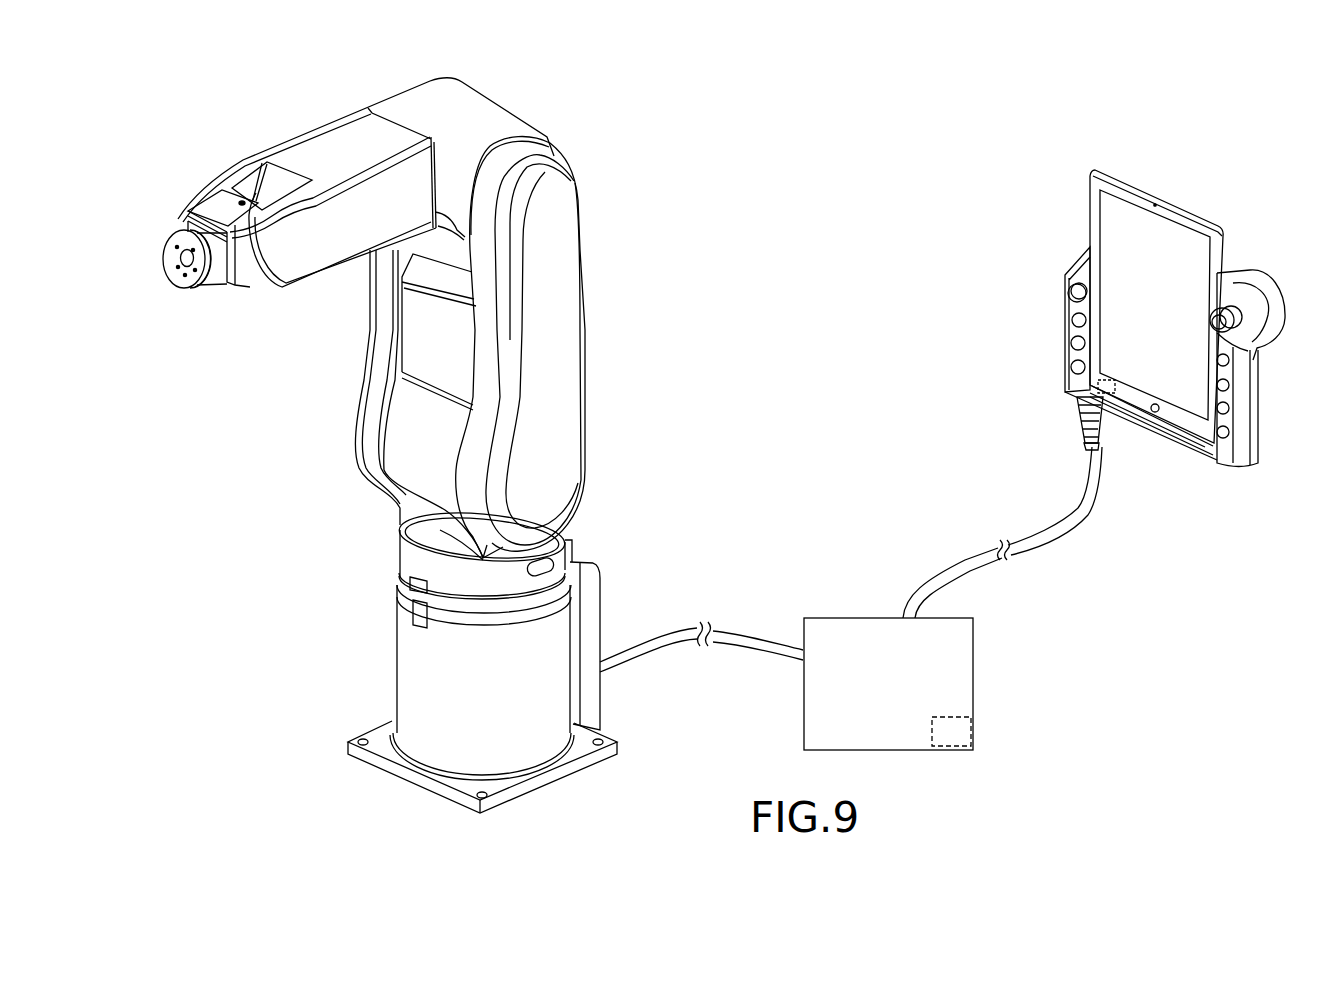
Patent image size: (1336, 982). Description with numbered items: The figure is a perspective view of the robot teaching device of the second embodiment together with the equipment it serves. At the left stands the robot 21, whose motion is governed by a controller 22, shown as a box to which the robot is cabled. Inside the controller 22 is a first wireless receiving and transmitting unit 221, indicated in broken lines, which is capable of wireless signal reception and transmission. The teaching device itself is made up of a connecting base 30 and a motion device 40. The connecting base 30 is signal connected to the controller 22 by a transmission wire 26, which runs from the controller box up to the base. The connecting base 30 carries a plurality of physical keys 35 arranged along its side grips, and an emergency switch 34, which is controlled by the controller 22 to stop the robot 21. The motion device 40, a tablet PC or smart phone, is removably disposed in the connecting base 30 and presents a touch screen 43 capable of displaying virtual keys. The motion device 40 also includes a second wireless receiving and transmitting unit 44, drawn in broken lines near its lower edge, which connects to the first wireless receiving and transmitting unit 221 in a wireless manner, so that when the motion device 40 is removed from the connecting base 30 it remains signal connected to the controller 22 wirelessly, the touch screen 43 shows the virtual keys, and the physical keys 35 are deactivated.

The robot 21 is at (585, 258).
The controller 22 is at (850, 618).
The first wireless receiving and transmitting unit 221 is at (952, 731).
The transmission wire 26 is at (1053, 531).
The connecting base 30 is at (1210, 457).
The emergency switch 34 is at (1222, 313).
The physical keys 35 is at (1075, 317).
The motion device 40 is at (1142, 173).
The touch screen 43 is at (1172, 240).
The second wireless receiving and transmitting unit 44 is at (1100, 385).